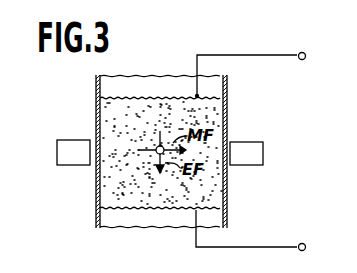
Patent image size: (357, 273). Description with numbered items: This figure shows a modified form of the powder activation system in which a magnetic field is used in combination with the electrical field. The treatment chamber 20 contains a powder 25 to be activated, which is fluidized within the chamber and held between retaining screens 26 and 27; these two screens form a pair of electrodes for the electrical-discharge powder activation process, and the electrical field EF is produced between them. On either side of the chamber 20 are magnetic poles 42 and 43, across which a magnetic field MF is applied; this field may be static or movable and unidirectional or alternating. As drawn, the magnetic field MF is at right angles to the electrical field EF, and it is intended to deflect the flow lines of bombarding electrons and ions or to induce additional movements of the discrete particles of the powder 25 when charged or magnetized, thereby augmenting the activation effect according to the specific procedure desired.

The treatment chamber 20 is at (95, 105).
The retaining screen 26 is at (167, 98).
The powder 25 is at (175, 174).
The retaining screen 27 is at (148, 212).
The pole 42 is at (74, 165).
The pole 43 is at (246, 165).